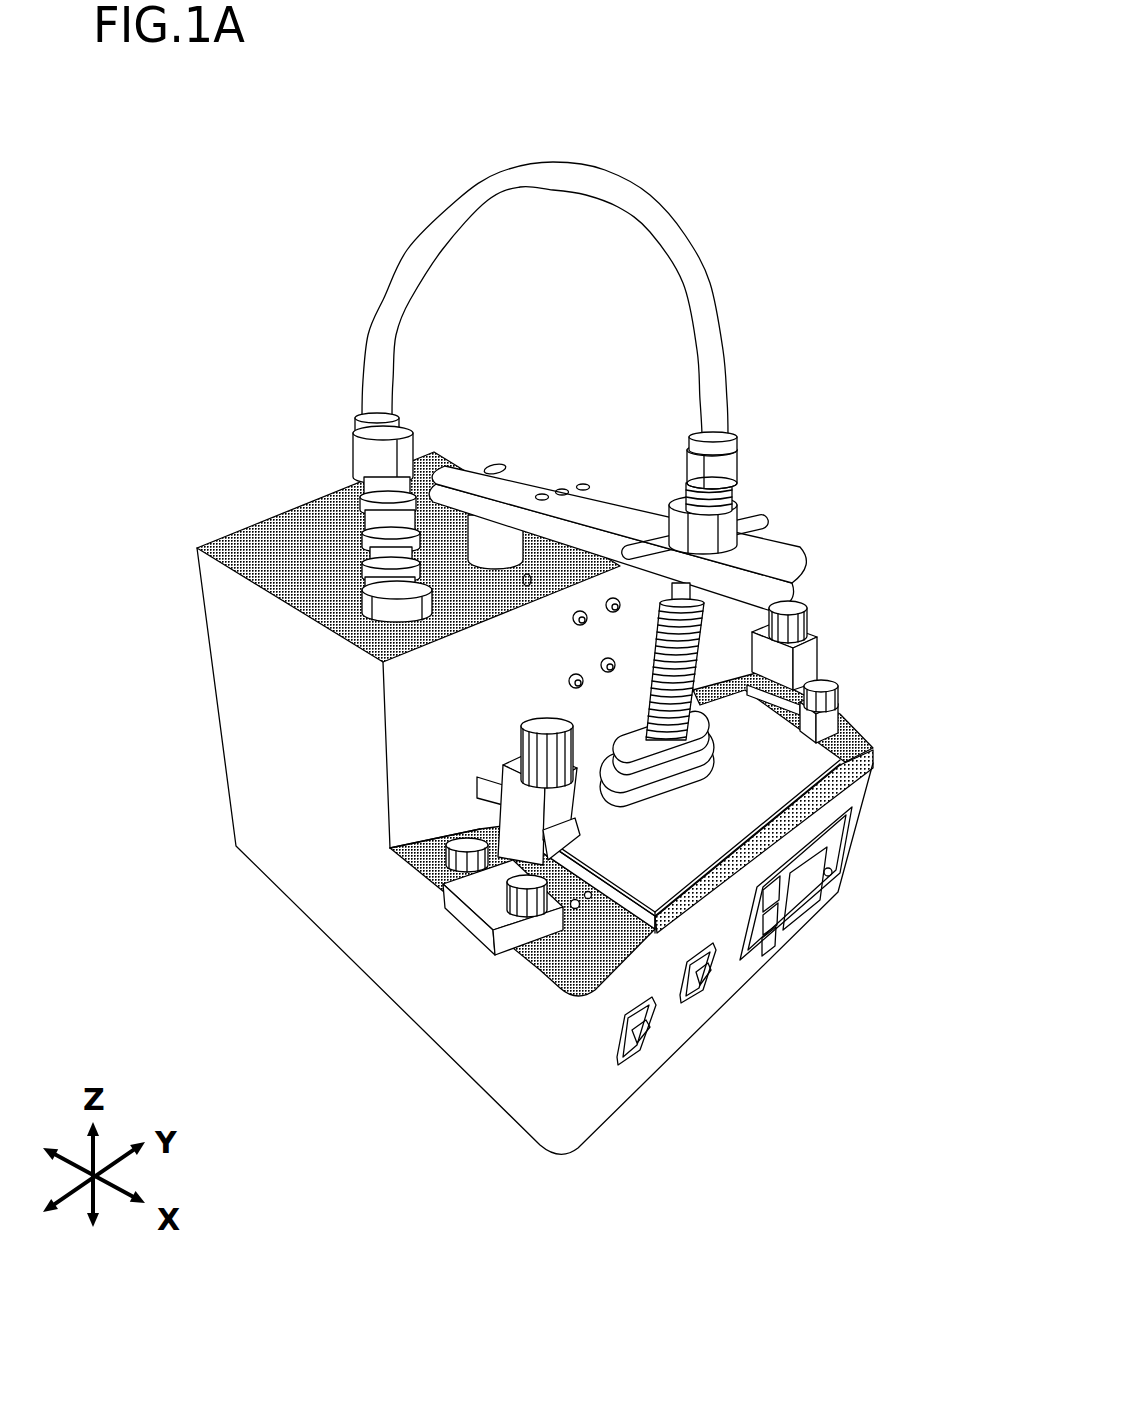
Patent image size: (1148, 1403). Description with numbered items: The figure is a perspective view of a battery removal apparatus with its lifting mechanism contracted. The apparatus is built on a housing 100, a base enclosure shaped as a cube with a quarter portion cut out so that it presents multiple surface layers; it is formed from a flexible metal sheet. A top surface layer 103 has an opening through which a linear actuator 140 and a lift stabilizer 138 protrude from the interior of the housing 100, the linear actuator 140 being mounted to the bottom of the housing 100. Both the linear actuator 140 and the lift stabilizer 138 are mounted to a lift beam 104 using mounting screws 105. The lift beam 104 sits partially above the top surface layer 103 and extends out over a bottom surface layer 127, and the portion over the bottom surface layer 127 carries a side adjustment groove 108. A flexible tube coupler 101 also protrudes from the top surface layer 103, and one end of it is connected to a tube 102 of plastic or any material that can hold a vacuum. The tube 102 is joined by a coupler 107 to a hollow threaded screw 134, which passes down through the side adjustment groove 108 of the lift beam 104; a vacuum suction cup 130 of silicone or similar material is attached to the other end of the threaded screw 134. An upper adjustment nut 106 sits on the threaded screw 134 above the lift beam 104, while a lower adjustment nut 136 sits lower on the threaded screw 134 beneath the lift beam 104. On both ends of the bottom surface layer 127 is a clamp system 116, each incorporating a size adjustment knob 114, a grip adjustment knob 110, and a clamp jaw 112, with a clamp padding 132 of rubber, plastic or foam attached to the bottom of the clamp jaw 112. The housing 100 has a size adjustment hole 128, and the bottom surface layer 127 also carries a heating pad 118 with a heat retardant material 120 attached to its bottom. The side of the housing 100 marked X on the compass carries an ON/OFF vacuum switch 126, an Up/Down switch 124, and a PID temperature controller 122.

The housing 100 is at (482, 803).
The flexible tube coupler 101 is at (360, 457).
The tube 102 is at (378, 298).
The top surface layer 103 is at (245, 567).
The lift beam 104 is at (617, 498).
The mounting screws 105 is at (500, 466).
The upper adjustment nut 106 is at (737, 520).
The coupler 107 is at (735, 457).
The side adjustment groove 108 is at (717, 527).
The grip adjustment knob 110 is at (537, 730).
The clamp jaw 112 is at (578, 852).
The size adjustment knob 114 is at (400, 857).
The clamp system 116 is at (467, 887).
The heating pad 118 is at (865, 762).
The heat retardant material 120 is at (830, 873).
The PID temperature controller 122 is at (805, 905).
The Up/Down switch 124 is at (707, 988).
The ON/OFF vacuum switch 126 is at (650, 1037).
The bottom surface layer 127 is at (555, 977).
The size adjustment hole 128 is at (577, 915).
The vacuum suction cup 130 is at (673, 777).
The clamp padding 132 is at (858, 778).
The hollow threaded screw 134 is at (660, 715).
The lower adjustment nut 136 is at (655, 600).
The lift stabilizer 138 is at (523, 570).
The linear actuator 140 is at (378, 582).